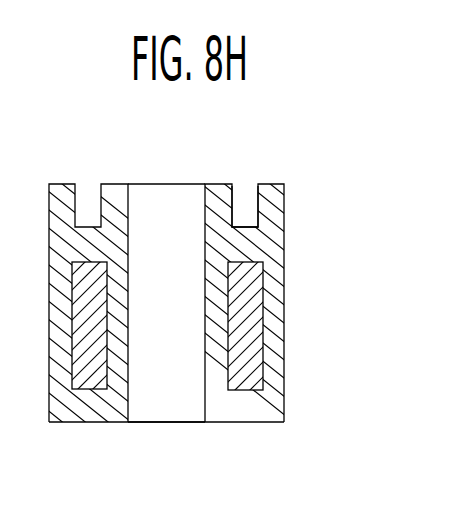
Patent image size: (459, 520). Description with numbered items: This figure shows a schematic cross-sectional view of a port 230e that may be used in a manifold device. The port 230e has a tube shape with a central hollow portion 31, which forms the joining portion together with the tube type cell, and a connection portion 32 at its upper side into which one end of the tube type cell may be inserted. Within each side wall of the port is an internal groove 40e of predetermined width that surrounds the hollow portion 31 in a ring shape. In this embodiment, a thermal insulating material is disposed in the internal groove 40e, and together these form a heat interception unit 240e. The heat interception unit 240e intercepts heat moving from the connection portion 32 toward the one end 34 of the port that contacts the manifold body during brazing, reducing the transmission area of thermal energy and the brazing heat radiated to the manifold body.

The port 230e is at (338, 165).
The hollow portion 31 is at (173, 193).
The connection portion 32 is at (245, 193).
The one end of the port 34 is at (246, 424).
The internal groove 40e is at (262, 295).
The heat interception unit 240e is at (255, 340).